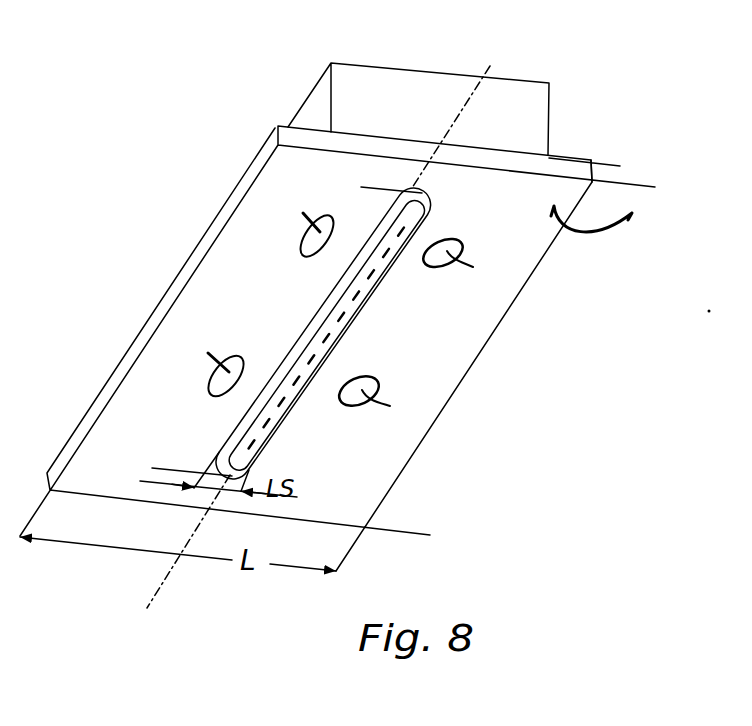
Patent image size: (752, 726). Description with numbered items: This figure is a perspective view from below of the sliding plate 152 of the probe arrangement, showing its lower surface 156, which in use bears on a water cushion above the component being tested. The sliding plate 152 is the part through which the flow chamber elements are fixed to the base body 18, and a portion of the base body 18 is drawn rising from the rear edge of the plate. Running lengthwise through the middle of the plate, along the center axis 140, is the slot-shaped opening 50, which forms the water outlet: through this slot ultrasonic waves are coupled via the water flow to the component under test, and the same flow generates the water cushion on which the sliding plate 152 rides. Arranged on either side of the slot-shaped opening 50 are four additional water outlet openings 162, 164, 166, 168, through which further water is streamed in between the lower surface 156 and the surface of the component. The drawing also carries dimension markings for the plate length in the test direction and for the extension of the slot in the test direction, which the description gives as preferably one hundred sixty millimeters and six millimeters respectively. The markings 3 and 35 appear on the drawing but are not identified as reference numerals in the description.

The base plate 3 is at (649, 186).
The base body 18 is at (566, 80).
The slot length dimension 35 is at (364, 189).
The slot-shaped opening 50 is at (358, 303).
The center axis 140 is at (157, 584).
The sliding plate 152 is at (606, 155).
The lower surface 156 is at (665, 219).
The water outlet opening 162 is at (372, 411).
The water outlet opening 164 is at (191, 376).
The water outlet opening 166 is at (290, 234).
The water outlet opening 168 is at (482, 253).